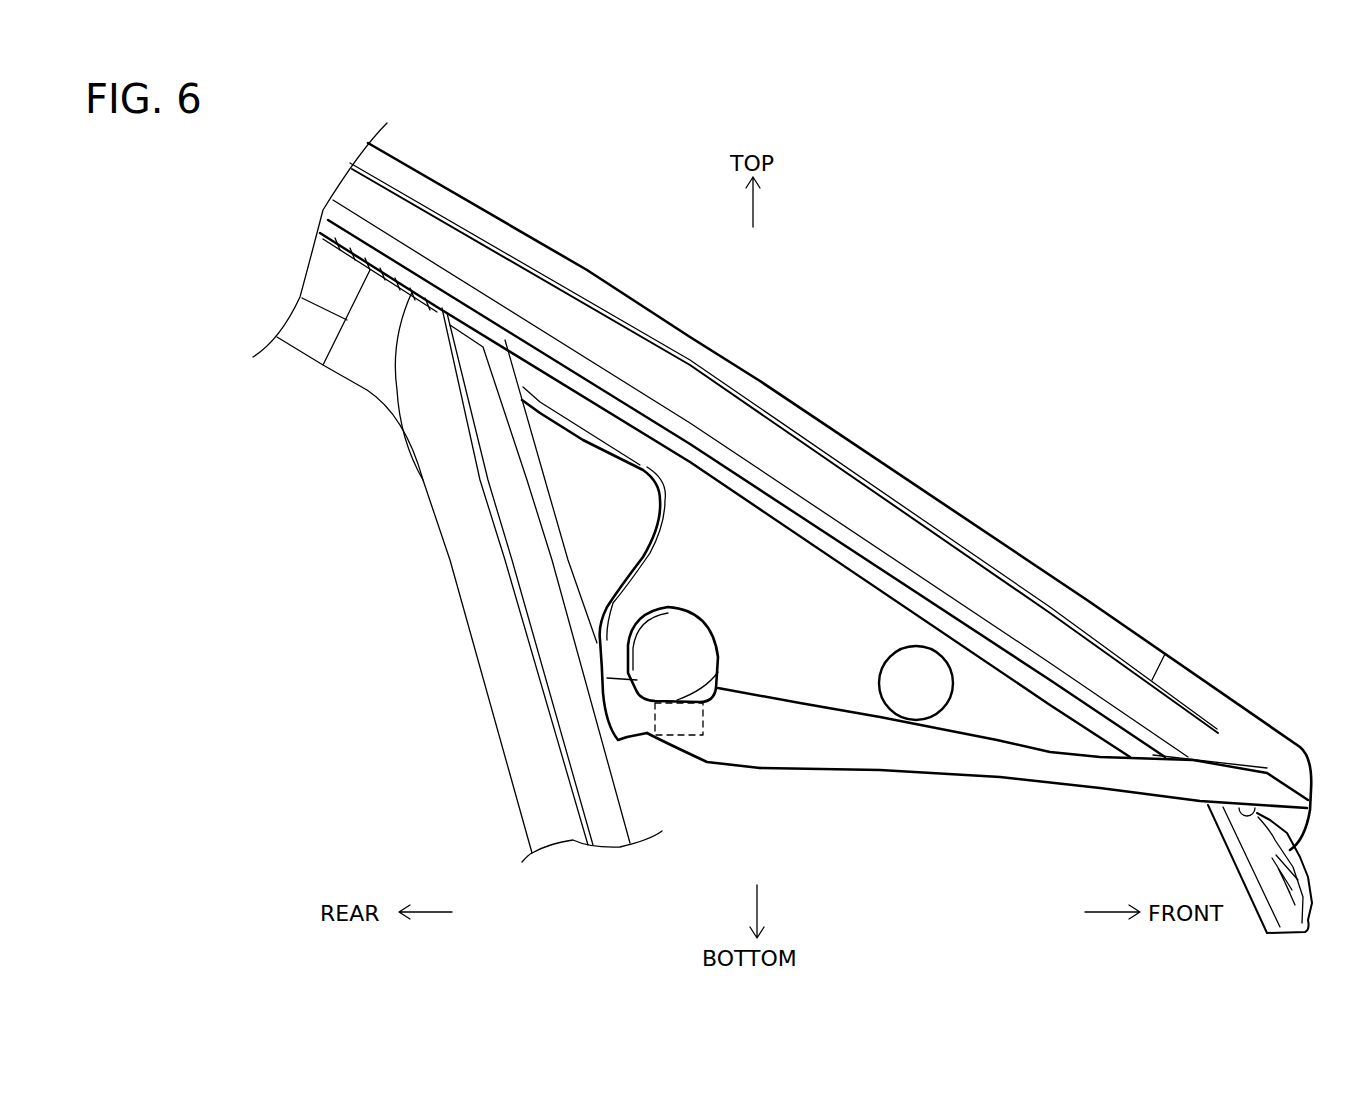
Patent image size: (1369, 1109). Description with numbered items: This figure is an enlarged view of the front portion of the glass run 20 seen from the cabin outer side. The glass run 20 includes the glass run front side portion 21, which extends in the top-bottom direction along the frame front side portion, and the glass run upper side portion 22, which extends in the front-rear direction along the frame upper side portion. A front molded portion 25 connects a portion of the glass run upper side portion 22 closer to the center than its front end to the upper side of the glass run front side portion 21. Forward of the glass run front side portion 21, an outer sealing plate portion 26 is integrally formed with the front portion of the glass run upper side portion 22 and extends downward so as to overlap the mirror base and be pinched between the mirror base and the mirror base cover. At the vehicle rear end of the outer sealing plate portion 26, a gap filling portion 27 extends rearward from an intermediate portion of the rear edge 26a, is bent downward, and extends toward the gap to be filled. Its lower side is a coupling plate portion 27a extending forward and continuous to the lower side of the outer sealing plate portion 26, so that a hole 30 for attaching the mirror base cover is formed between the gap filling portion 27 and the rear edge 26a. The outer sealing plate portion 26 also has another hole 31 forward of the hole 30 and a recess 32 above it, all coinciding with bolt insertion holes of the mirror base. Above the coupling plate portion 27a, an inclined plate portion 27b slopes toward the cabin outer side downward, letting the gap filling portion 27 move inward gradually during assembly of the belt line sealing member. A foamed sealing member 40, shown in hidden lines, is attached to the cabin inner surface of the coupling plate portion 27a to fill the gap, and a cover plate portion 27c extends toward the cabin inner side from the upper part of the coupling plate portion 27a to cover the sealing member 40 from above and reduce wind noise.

The glass run 20 is at (668, 266).
The glass run front side portion 21 is at (504, 753).
The glass run upper side portion 22 is at (587, 270).
The front molded portion 25 is at (432, 454).
The outer sealing plate portion 26 is at (810, 743).
The rear edge 26a is at (717, 648).
The gap filling portion 27 is at (610, 582).
The coupling plate portion 27a is at (677, 757).
The inclined plate portion 27b is at (600, 615).
The cover plate portion 27c is at (718, 672).
The hole for attaching the mirror base cover 30 is at (663, 607).
The hole 31 is at (948, 698).
The recess 32 is at (673, 503).
The sealing member 40 is at (703, 722).